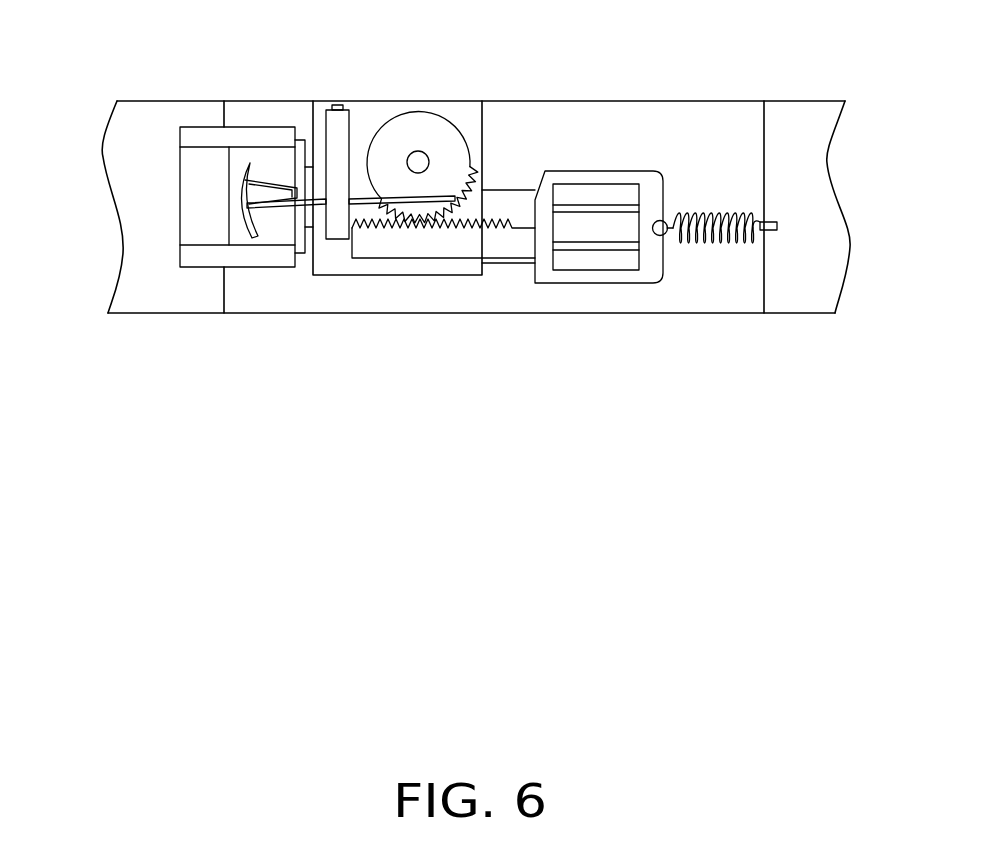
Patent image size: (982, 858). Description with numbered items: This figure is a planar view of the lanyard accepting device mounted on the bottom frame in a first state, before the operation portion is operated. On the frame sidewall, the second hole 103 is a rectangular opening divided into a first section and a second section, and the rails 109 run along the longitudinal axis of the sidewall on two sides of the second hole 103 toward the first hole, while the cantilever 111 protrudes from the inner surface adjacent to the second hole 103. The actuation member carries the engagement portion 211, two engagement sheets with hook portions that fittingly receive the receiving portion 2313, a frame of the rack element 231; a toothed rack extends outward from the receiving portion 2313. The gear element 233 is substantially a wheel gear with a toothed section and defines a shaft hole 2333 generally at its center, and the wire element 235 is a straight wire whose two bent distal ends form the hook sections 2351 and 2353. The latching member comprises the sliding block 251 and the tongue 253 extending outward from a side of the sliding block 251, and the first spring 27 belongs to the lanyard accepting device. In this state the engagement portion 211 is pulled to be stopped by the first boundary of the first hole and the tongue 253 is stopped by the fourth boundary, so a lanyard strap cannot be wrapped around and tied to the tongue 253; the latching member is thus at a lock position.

The second hole 103 is at (198, 170).
The rails 109 is at (195, 138).
The cantilever 111 is at (333, 132).
The engagement portion 211 is at (623, 193).
The receiving portion 2313 is at (572, 178).
The rack element 231 is at (500, 243).
The gear element 233 is at (390, 143).
The shaft hole 2333 is at (427, 160).
The wire element 235 is at (390, 202).
The hook section 2351 is at (457, 212).
The hook section 2353 is at (243, 207).
The sliding block 251 is at (280, 223).
The tongue 253 is at (313, 233).
The first spring 27 is at (693, 240).